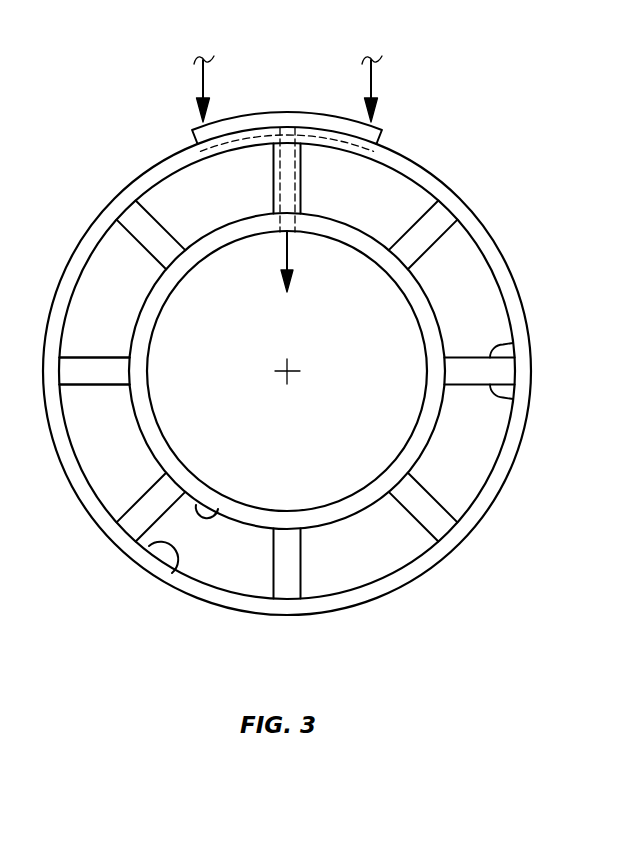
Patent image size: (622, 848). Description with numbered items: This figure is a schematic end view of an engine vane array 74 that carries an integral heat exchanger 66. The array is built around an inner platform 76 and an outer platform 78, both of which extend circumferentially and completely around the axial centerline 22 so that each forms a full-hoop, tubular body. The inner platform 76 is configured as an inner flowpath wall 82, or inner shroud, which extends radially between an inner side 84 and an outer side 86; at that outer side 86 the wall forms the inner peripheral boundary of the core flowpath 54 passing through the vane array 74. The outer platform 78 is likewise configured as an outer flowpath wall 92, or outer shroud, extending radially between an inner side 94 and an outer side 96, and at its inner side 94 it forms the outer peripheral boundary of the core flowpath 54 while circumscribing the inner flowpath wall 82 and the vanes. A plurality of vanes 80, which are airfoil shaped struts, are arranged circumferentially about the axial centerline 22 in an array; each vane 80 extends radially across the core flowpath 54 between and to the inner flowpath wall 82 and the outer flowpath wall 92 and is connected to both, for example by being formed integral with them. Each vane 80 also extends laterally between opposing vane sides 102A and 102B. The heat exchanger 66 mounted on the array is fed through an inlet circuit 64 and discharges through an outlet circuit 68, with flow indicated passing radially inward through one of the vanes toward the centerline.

The axial centerline 22 is at (292, 373).
The core flowpath 54 is at (134, 265).
The inlet circuit 64 is at (200, 72).
The heat exchanger 66 is at (291, 92).
The outlet circuit 68 is at (282, 258).
The engine vane array 74 is at (468, 176).
The inner platform 76 is at (401, 330).
The outer platform 78 is at (531, 279).
The vanes 80 is at (174, 212).
The inner flowpath wall 82 is at (343, 493).
The inner side of the inner flowpath wall 84 is at (208, 478).
The outer side of the inner flowpath wall 86 is at (218, 509).
The outer flowpath wall 92 is at (380, 597).
The inner side of the outer flowpath wall 94 is at (165, 578).
The outer side of the outer flowpath wall 96 is at (130, 560).
The vane side 102A is at (514, 342).
The vane side 102B is at (514, 399).